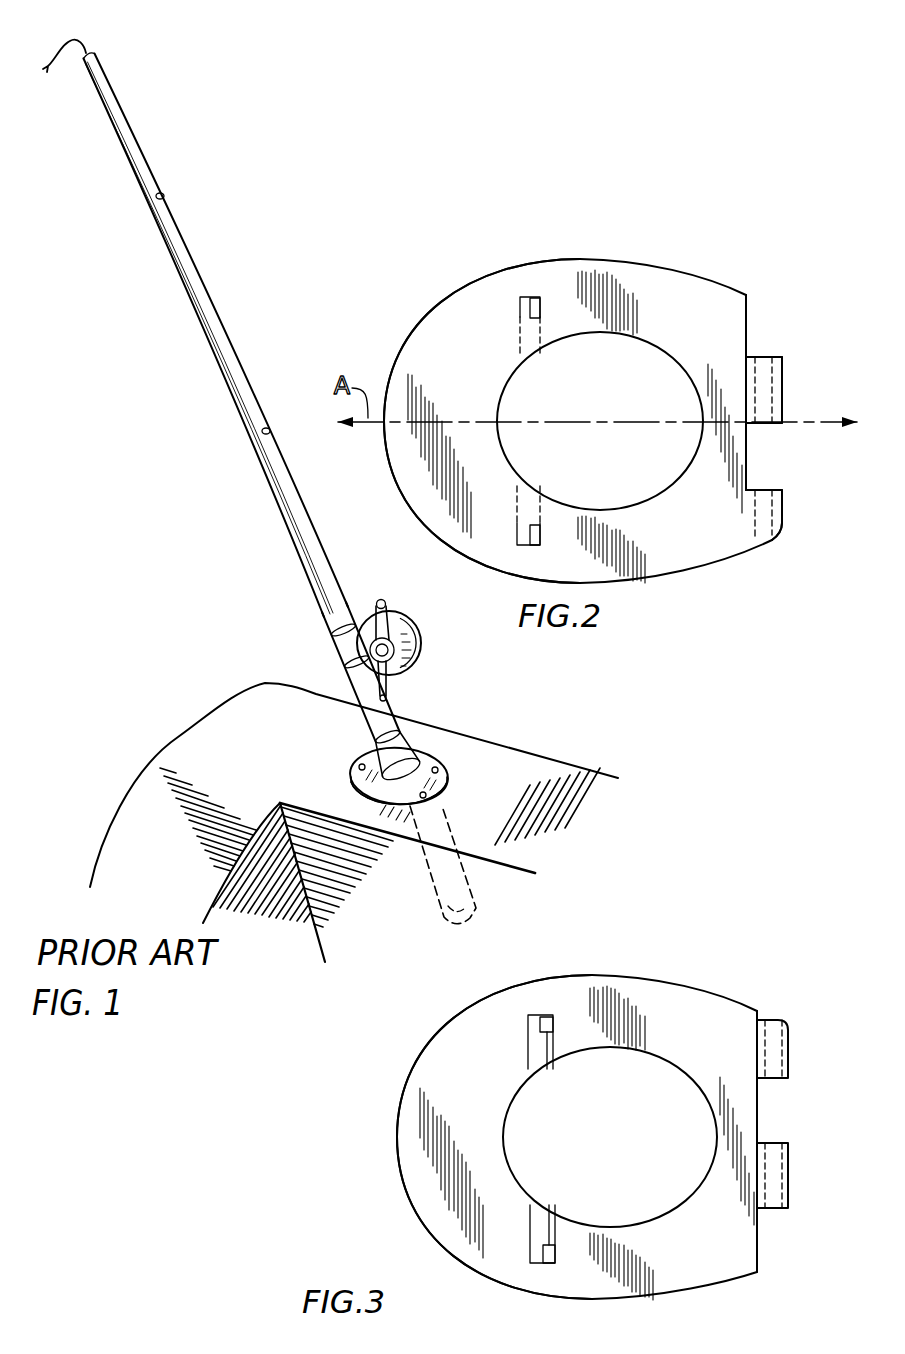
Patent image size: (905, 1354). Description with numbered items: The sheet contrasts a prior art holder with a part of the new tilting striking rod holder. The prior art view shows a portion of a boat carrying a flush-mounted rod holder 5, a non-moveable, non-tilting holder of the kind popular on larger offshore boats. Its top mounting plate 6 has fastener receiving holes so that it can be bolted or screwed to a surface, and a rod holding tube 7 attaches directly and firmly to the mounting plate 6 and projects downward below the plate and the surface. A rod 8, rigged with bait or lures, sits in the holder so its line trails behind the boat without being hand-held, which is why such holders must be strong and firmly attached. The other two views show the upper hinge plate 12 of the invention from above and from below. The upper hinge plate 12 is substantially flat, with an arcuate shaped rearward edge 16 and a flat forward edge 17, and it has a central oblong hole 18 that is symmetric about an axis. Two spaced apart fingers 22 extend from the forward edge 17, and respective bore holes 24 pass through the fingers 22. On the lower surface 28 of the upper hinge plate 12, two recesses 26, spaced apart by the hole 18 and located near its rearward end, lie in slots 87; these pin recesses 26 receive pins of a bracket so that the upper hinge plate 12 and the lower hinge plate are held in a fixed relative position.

In FIG. 1, the flush-mounted rod holder 5 is at (437, 768).
In FIG. 1, the top mounting plate 6 is at (452, 772).
In FIG. 1, the rod holding tube 7 is at (418, 857).
In FIG. 1, the rod 8 is at (179, 257).
In FIG. 2, the upper hinge plate 12 is at (587, 262).
In FIG. 3, the upper hinge plate 12 is at (623, 977).
In FIG. 2, the arcuate shaped rearward edge 16 is at (392, 470).
In FIG. 3, the arcuate shaped rearward edge 16 is at (398, 1132).
In FIG. 2, the flat forward edge 17 is at (747, 313).
In FIG. 3, the flat forward edge 17 is at (758, 1117).
In FIG. 2, the central oblong hole 18 is at (663, 347).
In FIG. 3, the central oblong hole 18 is at (620, 1048).
In FIG. 2, the fingers 22 is at (780, 357).
In FIG. 3, the fingers 22 is at (780, 1022).
In FIG. 2, the bore holes 24 is at (773, 393).
In FIG. 3, the bore holes 24 is at (784, 1055).
In FIG. 2, the recesses 26 is at (517, 317).
In FIG. 3, the recesses 26 is at (537, 1015).
In FIG. 3, the lower surface 28 is at (476, 1040).
In FIG. 2, the slots 87 is at (537, 317).
In FIG. 3, the slots 87 is at (547, 1033).